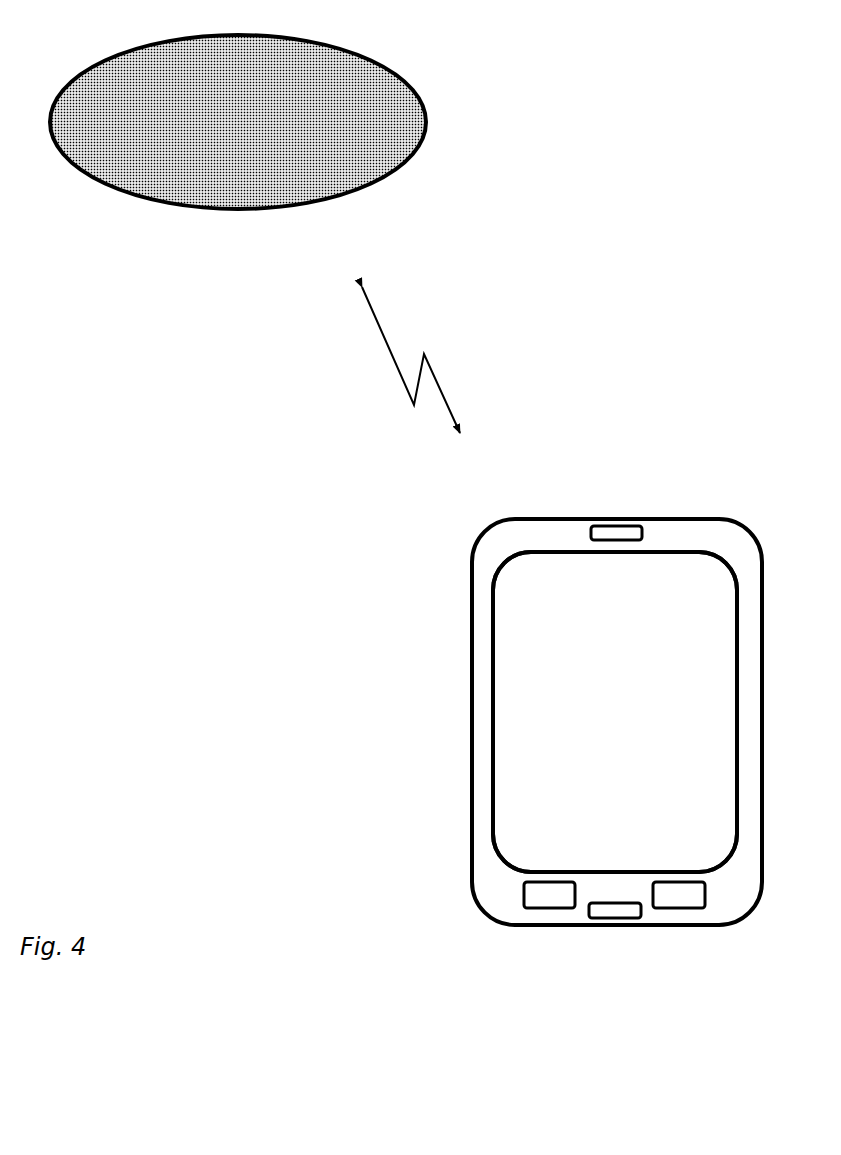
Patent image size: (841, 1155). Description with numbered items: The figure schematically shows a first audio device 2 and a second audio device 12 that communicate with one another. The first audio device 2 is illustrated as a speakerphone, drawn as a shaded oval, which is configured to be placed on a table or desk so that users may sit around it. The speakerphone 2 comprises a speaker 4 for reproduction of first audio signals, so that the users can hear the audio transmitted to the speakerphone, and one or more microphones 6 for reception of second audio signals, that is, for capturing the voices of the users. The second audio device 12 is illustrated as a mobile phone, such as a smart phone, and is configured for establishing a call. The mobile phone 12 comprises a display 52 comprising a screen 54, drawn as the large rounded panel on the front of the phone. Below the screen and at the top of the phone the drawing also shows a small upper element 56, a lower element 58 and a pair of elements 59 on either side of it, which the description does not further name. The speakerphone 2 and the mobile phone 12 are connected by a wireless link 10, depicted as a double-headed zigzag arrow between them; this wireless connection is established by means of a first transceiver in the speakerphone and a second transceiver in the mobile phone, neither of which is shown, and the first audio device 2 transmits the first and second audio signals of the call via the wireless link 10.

The first audio device 2 is at (412, 72).
The speaker 4 is at (157, 115).
The microphone 6 is at (293, 115).
The wireless link 10 is at (423, 360).
The second audio device 12 is at (442, 789).
The display 52 is at (510, 638).
The screen 54 is at (615, 712).
The speaker 56 is at (607, 531).
The home button 58 is at (623, 908).
The buttons 59 is at (547, 899).